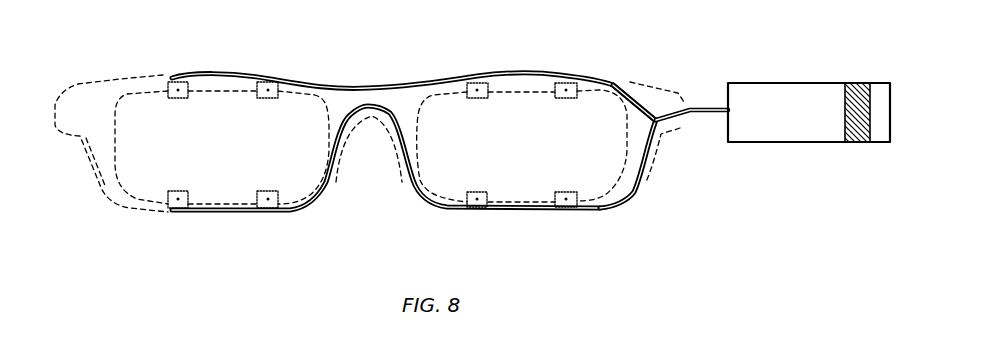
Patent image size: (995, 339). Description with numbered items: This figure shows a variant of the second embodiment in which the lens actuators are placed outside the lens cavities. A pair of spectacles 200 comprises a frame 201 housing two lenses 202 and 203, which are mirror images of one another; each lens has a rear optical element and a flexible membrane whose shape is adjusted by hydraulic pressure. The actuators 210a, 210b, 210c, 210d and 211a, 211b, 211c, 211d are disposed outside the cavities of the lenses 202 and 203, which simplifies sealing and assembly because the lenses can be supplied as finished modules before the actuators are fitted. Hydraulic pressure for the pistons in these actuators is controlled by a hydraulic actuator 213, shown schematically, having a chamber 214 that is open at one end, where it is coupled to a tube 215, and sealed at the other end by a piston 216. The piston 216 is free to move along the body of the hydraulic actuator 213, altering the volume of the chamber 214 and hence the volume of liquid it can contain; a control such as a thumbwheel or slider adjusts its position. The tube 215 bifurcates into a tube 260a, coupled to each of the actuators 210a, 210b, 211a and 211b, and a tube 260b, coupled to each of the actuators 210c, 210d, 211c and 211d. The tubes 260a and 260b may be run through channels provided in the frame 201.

The pair of spectacles 200 is at (118, 254).
The frame 201 is at (75, 97).
The lens 202 is at (332, 198).
The lens 203 is at (640, 203).
The actuator 210a is at (477, 82).
The actuator 210b is at (565, 82).
The actuator 210c is at (565, 209).
The actuator 210d is at (477, 209).
The actuator 211a is at (175, 81).
The actuator 211b is at (266, 81).
The actuator 211c is at (266, 210).
The actuator 211d is at (177, 210).
The hydraulic actuator 213 is at (783, 82).
The chamber 214 is at (782, 136).
The piston 216 is at (857, 143).
The tube 215 is at (704, 106).
The tube 260a is at (615, 80).
The tube 260b is at (374, 112).